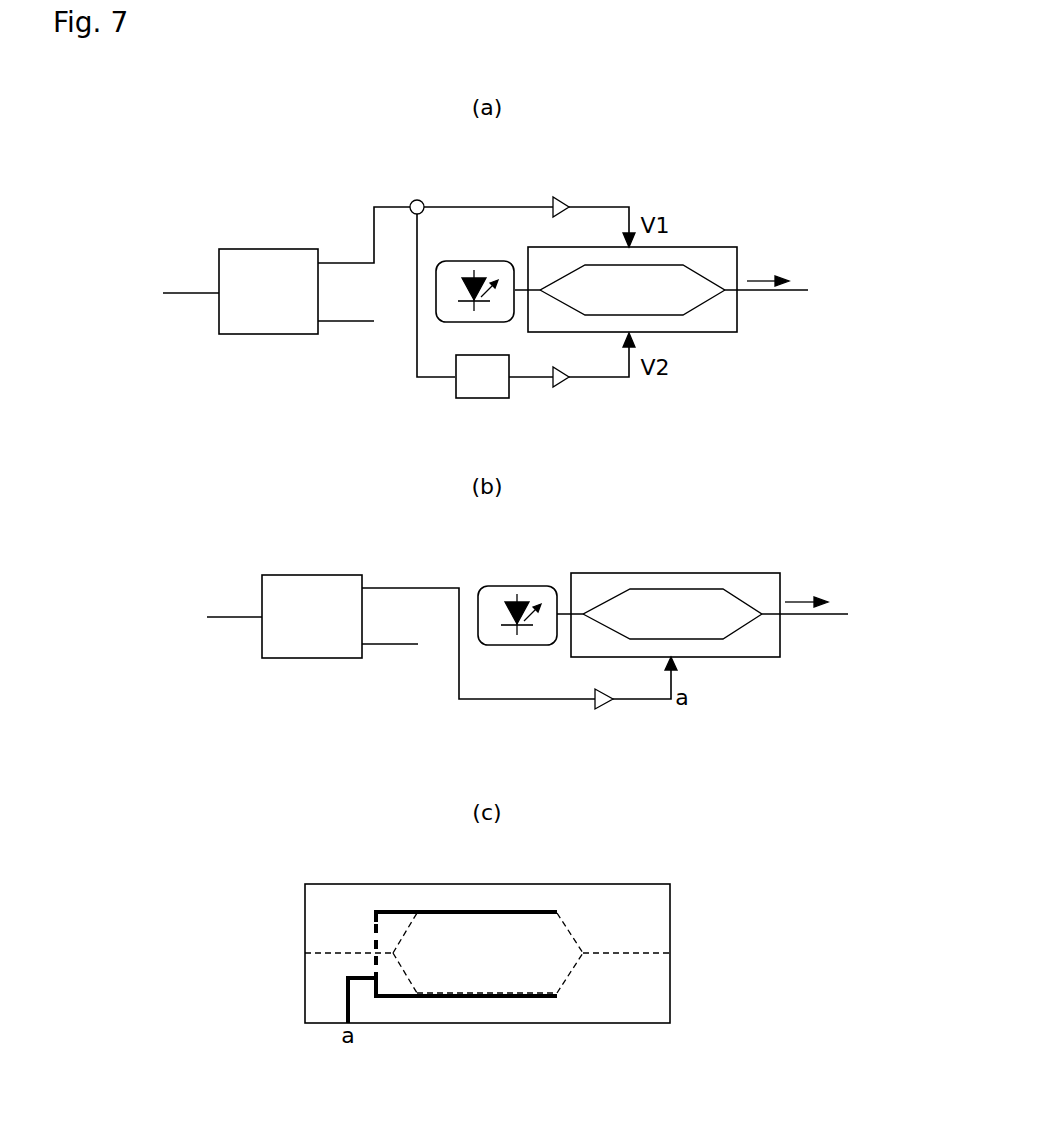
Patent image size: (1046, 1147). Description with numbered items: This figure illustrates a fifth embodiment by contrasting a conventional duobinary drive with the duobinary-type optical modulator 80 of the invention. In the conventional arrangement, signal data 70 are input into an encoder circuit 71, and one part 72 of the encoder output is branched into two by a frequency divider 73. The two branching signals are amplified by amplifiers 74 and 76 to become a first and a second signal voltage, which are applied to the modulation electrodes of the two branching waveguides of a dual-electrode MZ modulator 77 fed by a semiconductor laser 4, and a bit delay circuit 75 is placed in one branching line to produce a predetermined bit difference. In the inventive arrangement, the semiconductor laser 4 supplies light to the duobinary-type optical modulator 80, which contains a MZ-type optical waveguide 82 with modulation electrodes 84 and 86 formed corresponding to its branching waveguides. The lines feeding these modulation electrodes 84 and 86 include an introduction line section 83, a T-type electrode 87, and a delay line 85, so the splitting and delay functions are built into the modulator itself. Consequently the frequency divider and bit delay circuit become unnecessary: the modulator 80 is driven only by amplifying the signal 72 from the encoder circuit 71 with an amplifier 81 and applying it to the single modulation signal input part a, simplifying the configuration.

The signal data 70 is at (192, 297).
The encoder circuit 71 is at (271, 269).
The signal part outputted from the encoder circuit 72 is at (345, 261).
The frequency divider 73 is at (413, 198).
The amplifier 74 is at (562, 195).
The bit delay circuit 75 is at (482, 377).
The amplifier 76 is at (562, 383).
The dual-electrode MZ modulator 77 is at (697, 245).
The semiconductor laser 4 is at (475, 262).
The duobinary-type optical modulator 80 is at (740, 570).
The amplifier 81 is at (603, 710).
The MZ-type optical waveguide 82 is at (580, 980).
The introduction line section 83 is at (350, 1003).
The modulation electrode 84 is at (490, 998).
The delay line 85 is at (373, 943).
The modulation electrode 86 is at (490, 910).
The T-type electrode 87 is at (373, 977).